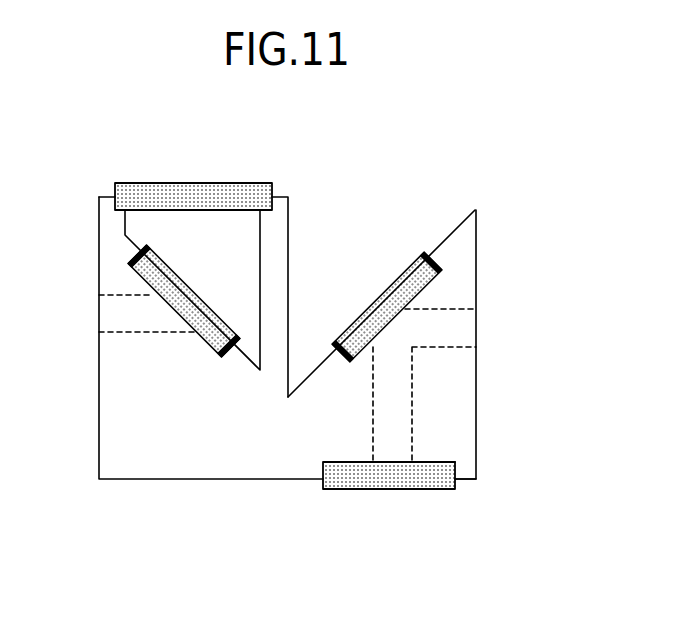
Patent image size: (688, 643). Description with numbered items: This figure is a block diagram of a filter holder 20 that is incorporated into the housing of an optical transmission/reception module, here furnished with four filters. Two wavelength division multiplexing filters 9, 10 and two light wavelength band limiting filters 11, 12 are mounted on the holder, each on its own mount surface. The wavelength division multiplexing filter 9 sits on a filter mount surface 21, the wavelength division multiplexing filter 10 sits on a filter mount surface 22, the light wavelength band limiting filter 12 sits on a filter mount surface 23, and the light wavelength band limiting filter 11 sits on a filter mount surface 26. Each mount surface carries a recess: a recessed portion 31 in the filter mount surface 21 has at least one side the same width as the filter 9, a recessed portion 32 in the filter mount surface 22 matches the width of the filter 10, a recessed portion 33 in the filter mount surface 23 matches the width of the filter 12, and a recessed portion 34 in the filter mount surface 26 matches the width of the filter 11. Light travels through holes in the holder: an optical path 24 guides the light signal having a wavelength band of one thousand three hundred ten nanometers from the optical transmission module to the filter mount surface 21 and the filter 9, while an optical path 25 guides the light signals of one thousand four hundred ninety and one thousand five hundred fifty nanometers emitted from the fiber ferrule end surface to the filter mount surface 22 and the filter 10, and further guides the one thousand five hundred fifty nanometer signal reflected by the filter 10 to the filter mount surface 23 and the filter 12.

The wavelength division multiplexing filter 9 is at (144, 298).
The wavelength division multiplexing filter 10 is at (437, 298).
The light wavelength band limiting filter 11 is at (235, 183).
The light wavelength band limiting filter 12 is at (407, 492).
The filter holder 20 is at (99, 427).
The filter mount surface 21 is at (128, 236).
The filter mount surface 22 is at (455, 230).
The filter mount surface 23 is at (463, 480).
The optical path 24 is at (117, 317).
The optical path 25 is at (460, 327).
The filter mount surface 26 is at (102, 197).
The recessed portion 31 is at (142, 279).
The recessed portion 32 is at (433, 278).
The recessed portion 33 is at (440, 462).
The recessed portion 34 is at (235, 210).